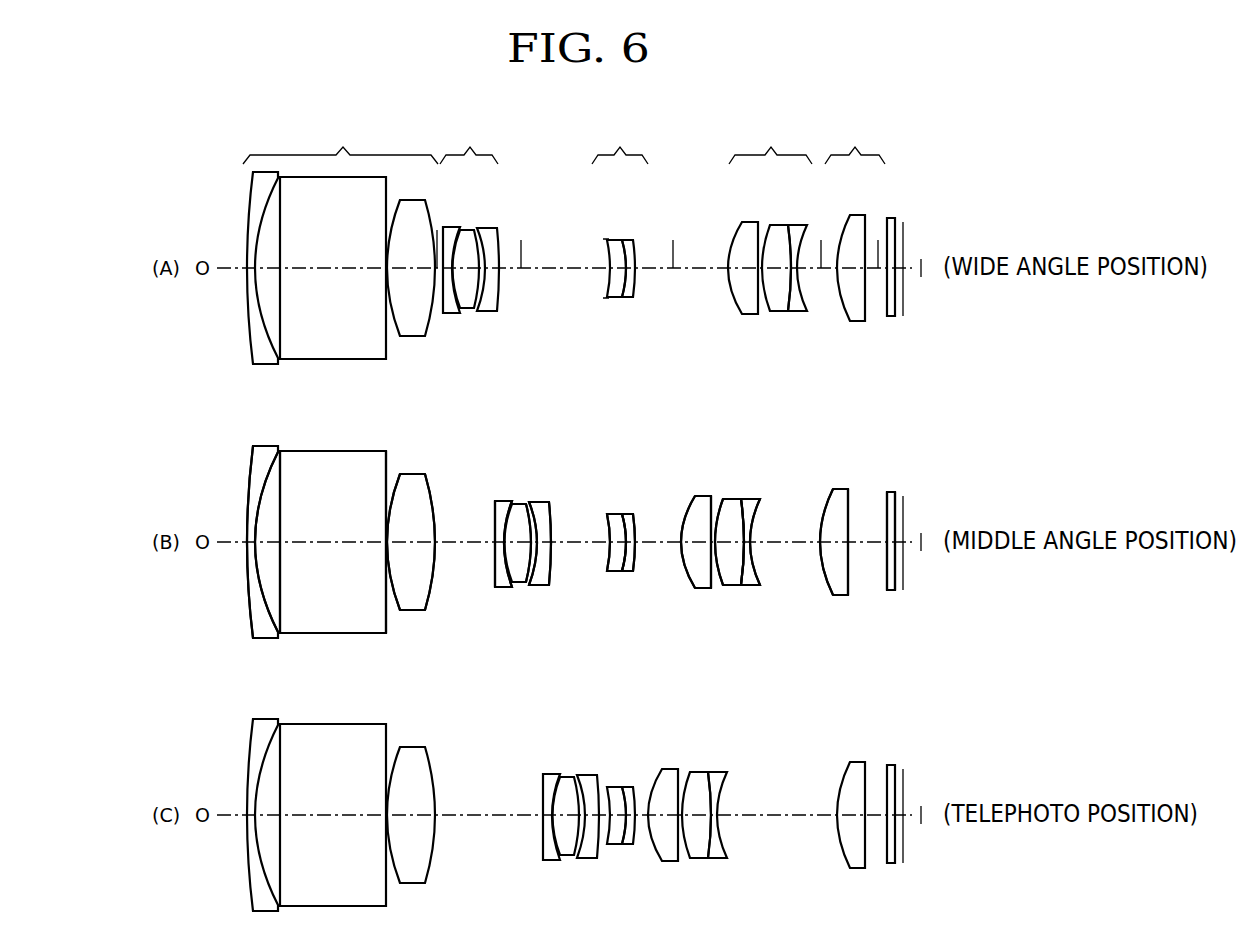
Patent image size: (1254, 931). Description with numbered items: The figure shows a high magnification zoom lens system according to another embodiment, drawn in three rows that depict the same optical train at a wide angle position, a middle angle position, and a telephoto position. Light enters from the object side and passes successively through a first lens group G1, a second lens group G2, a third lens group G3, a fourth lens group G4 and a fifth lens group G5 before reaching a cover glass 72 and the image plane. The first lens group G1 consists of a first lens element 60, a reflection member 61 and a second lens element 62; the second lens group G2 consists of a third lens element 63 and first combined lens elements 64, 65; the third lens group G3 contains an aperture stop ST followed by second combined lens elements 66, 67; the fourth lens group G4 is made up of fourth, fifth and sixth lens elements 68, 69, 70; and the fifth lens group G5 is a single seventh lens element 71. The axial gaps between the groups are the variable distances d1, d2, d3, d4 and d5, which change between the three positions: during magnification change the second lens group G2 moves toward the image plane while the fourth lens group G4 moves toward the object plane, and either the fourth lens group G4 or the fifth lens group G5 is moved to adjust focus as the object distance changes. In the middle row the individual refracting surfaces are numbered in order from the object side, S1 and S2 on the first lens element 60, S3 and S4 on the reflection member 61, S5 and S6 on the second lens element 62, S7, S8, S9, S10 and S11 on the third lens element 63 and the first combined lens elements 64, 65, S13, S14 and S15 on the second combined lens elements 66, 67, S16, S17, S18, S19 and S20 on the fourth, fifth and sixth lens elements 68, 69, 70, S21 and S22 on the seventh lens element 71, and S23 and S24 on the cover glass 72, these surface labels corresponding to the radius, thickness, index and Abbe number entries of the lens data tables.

The first lens group G1 is at (340, 140).
The second lens group G2 is at (469, 140).
The third lens group G3 is at (620, 140).
The fourth lens group G4 is at (770, 140).
The fifth lens group G5 is at (855, 140).
The variable distance d1 is at (437, 268).
The variable distance d2 is at (520, 268).
The variable distance d3 is at (673, 268).
The variable distance d4 is at (822, 268).
The variable distance d5 is at (878, 268).
The aperture stop ST is at (608, 240).
The first lens element 60 is at (258, 364).
The reflection member 61 is at (333, 359).
The second lens element 62 is at (412, 336).
The third lens element 63 is at (448, 313).
The first combined lens element 64 is at (472, 308).
The first combined lens element 65 is at (490, 311).
The second combined lens element 66 is at (607, 297).
The second combined lens element 67 is at (631, 297).
The fourth lens element 68 is at (752, 314).
The fifth lens element 69 is at (776, 311).
The sixth lens element 70 is at (797, 311).
The seventh lens element 71 is at (858, 321).
The cover glass 72 is at (891, 316).
The lens surface 1 S1 is at (250, 598).
The lens surface 2 S2 is at (266, 600).
The lens surface 3 S3 is at (283, 587).
The lens surface 4 S4 is at (385, 602).
The lens surface 5 S5 is at (397, 602).
The lens surface 6 S6 is at (433, 600).
The lens surface 7 S7 is at (495, 572).
The lens surface 8 S8 is at (508, 577).
The lens surface 9 S9 is at (510, 513).
The lens surface 10 S10 is at (533, 510).
The lens surface 11 S11 is at (548, 517).
The lens surface 13 S13 is at (605, 552).
The lens surface 14 S14 is at (623, 573).
The lens surface 15 S15 is at (633, 563).
The lens surface 16 S16 is at (687, 517).
The lens surface 17 S17 is at (703, 508).
The lens surface 18 S18 is at (715, 505).
The lens surface 19 S19 is at (747, 577).
The lens surface 20 S20 is at (758, 563).
The lens surface 21 S21 is at (825, 502).
The lens surface 22 S22 is at (852, 508).
The filter surface 23 S23 is at (883, 568).
The filter surface 24 S24 is at (895, 577).